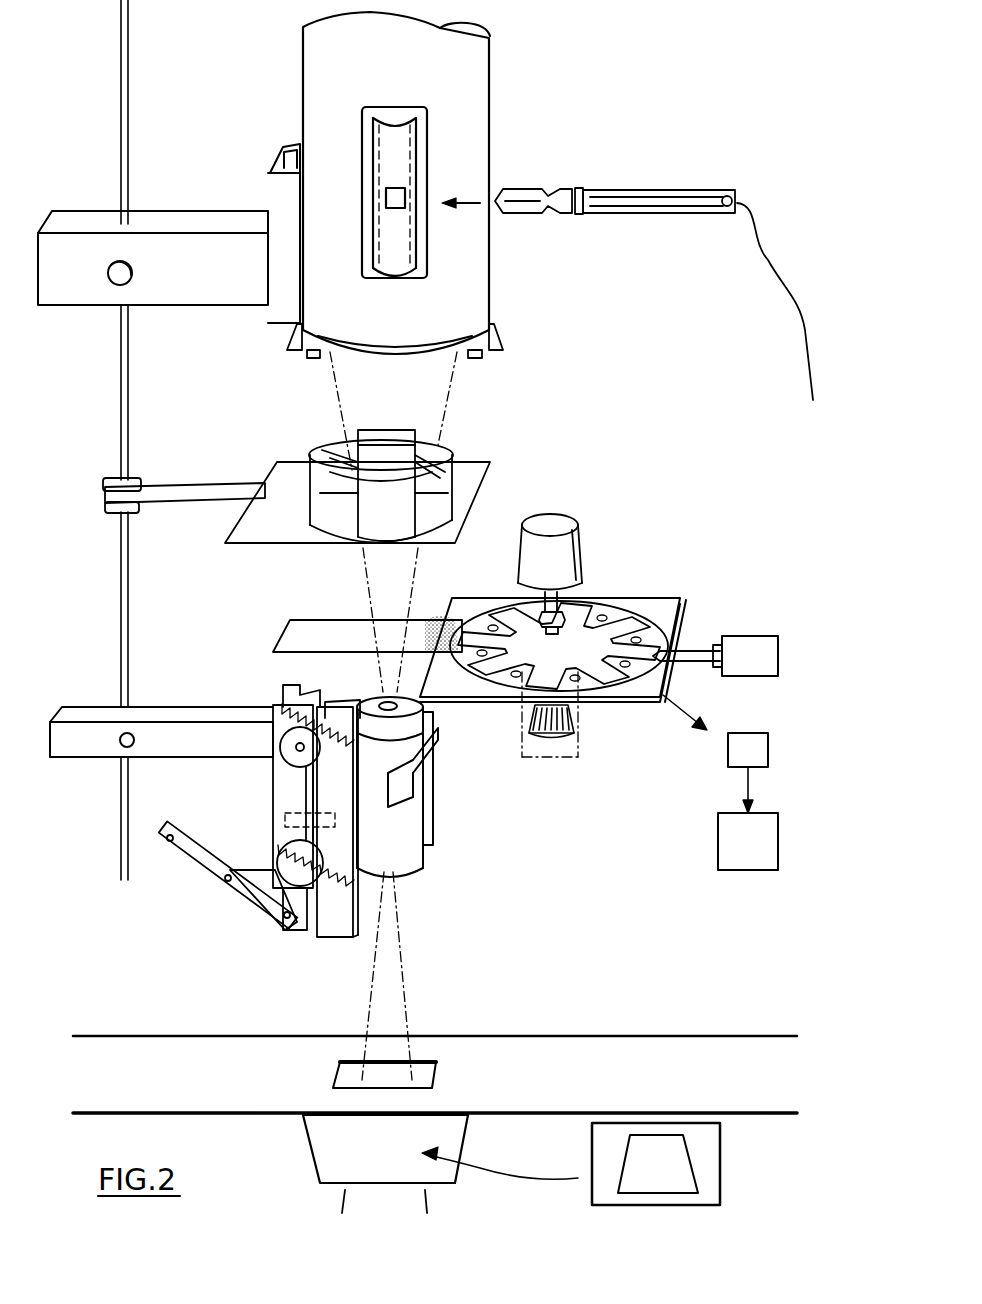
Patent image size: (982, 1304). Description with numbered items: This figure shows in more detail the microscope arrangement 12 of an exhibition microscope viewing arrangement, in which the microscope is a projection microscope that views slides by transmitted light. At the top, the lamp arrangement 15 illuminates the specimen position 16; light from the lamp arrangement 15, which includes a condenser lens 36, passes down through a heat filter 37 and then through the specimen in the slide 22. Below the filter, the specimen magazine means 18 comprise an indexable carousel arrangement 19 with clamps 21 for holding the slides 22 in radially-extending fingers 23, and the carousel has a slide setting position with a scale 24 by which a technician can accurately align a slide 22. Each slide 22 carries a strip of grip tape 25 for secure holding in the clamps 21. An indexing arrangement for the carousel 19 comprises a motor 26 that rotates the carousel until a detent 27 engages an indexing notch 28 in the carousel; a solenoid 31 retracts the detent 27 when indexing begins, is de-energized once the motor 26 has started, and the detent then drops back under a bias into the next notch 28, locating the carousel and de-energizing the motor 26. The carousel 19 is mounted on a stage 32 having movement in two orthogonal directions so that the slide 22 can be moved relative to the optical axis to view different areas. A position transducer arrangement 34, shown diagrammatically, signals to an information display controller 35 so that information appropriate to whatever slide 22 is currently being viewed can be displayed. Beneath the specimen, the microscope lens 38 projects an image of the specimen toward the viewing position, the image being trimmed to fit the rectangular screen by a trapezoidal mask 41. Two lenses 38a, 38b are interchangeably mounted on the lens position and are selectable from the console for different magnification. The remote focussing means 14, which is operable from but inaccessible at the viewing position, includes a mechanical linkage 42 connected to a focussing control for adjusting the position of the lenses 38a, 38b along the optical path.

The microscope arrangement 12 is at (614, 526).
The remote focussing means 14 is at (272, 802).
The lamp arrangement 15 is at (502, 115).
The specimen position 16 is at (238, 614).
The specimen magazine means 18 is at (686, 633).
The indexable carousel arrangement 19 is at (630, 630).
The clamps 21 is at (468, 668).
The slide 22 is at (345, 625).
The radially-extending fingers 23 is at (610, 603).
The scale 24 is at (575, 727).
The strip of grip tape 25 is at (438, 625).
The motor 26 is at (553, 525).
The detent 27 is at (687, 647).
The indexing notch 28 is at (672, 675).
The solenoid 31 is at (760, 636).
The stage 32 is at (625, 615).
The position transducer arrangement 34 is at (770, 748).
The information display controller 35 is at (755, 838).
The condenser lens 36 is at (430, 350).
The heat filter 37 is at (334, 448).
The microscope lens 38 is at (387, 702).
The lens 38a is at (405, 860).
The lens 38b is at (433, 842).
The trapezoidal mask 41 is at (708, 1163).
The mechanical linkage 42 is at (210, 868).